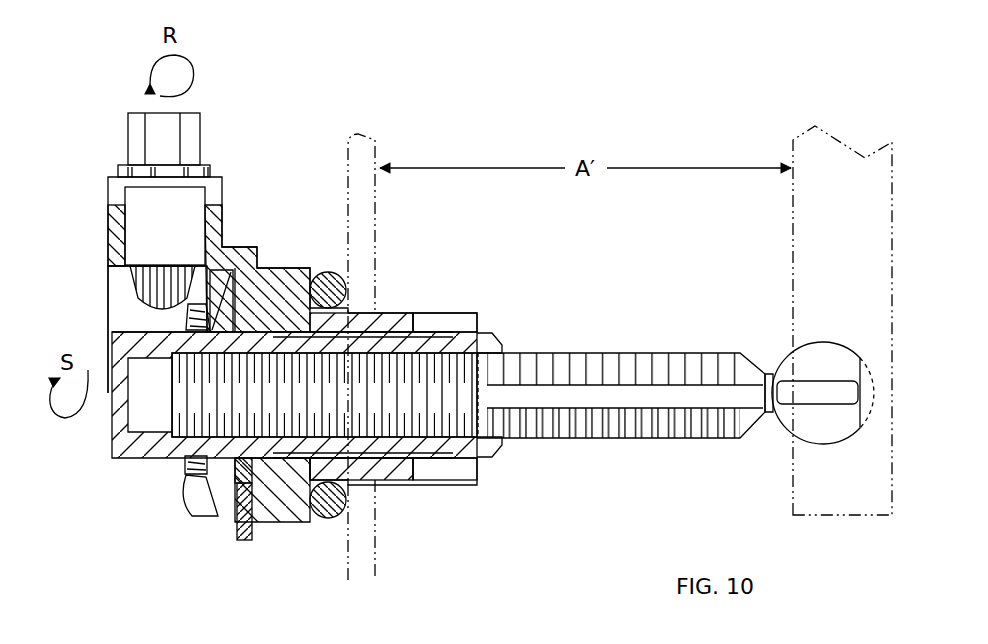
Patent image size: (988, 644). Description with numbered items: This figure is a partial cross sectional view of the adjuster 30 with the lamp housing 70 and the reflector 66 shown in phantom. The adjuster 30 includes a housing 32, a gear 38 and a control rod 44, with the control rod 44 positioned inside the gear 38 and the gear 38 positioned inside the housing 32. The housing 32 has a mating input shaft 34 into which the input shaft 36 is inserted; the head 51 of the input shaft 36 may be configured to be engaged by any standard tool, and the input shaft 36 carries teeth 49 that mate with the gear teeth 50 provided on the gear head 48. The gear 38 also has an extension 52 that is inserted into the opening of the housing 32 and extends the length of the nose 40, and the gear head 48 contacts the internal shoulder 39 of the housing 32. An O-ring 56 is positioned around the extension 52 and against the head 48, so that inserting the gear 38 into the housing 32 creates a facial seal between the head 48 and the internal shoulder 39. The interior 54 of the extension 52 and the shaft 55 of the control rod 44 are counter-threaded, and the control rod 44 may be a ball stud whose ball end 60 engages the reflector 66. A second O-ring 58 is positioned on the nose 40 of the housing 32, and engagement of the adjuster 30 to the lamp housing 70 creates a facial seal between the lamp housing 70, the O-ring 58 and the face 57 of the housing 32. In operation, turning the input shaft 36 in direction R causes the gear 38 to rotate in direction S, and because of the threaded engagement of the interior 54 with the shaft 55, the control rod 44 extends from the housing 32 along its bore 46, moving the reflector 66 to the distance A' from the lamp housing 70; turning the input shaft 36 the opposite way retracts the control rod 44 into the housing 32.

The adjuster 30 is at (530, 105).
The housing 32 is at (104, 306).
The mating input shaft 34 is at (222, 188).
The input shaft 36 is at (124, 130).
The gear 38 is at (109, 440).
The internal shoulder 39 is at (237, 287).
The nose 40 is at (465, 315).
The control rod 44 is at (711, 351).
The bore 46 is at (625, 395).
The gear head 48 is at (198, 512).
The tooth 49 is at (140, 297).
The gear tooth 50 is at (185, 477).
The head 51 is at (200, 116).
The extension 52 is at (395, 337).
The interior 54 is at (208, 410).
The shaft 55 is at (685, 440).
The O-ring 56 is at (250, 487).
The face 57 is at (308, 270).
The O-ring 58 is at (328, 520).
The ball end 60 is at (785, 430).
The reflector 66 is at (884, 200).
The lamp housing 70 is at (366, 134).